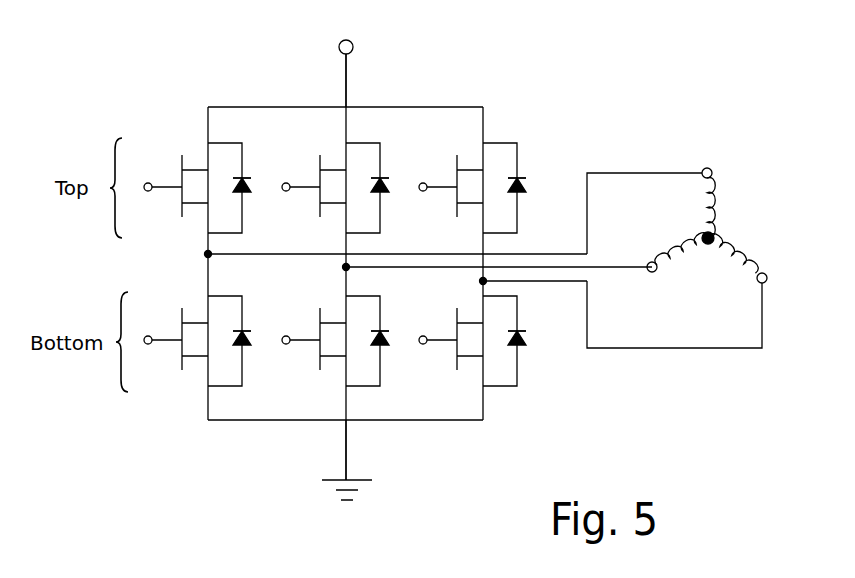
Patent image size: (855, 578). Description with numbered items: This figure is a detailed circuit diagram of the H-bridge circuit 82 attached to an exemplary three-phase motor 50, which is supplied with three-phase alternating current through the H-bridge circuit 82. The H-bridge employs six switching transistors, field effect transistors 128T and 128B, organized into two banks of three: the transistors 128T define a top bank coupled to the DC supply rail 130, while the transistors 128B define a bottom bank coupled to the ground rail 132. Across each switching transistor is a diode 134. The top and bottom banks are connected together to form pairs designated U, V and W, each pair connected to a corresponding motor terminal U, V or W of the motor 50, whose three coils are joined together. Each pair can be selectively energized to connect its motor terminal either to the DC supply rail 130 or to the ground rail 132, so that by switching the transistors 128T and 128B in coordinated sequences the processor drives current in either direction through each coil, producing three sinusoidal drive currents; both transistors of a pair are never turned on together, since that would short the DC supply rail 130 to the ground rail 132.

The three-phase motor 50 is at (774, 184).
The H-bridge circuit 82 is at (443, 82).
The top bank switching transistors 128T is at (180, 160).
The bottom bank switching transistors 128B is at (182, 370).
The DC supply rail 130 is at (346, 70).
The ground rail 132 is at (328, 460).
The diode 134 is at (248, 195).